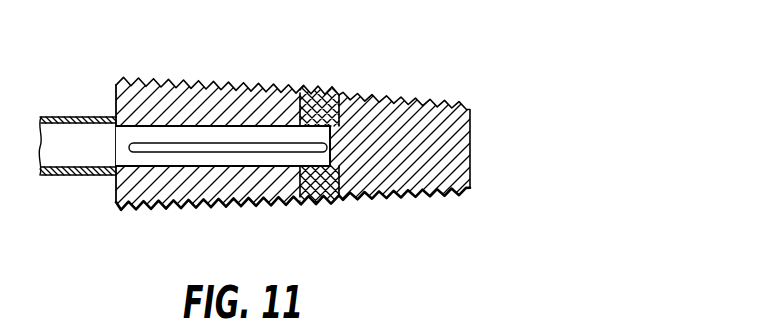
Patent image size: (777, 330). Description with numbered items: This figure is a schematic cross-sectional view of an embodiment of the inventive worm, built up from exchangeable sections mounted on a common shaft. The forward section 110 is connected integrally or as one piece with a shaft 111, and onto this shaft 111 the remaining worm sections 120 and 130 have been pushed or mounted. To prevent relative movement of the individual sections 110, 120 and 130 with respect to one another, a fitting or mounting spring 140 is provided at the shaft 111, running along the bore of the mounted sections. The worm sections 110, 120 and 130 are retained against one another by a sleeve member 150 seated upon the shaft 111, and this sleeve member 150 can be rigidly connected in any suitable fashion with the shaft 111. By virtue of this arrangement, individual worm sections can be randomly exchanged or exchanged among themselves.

The forward section 110 is at (412, 128).
The worm section 120 is at (315, 103).
The worm section 130 is at (230, 97).
The fitting spring 140 is at (218, 160).
The sleeve member 150 is at (63, 118).
The shaft 111 is at (67, 155).